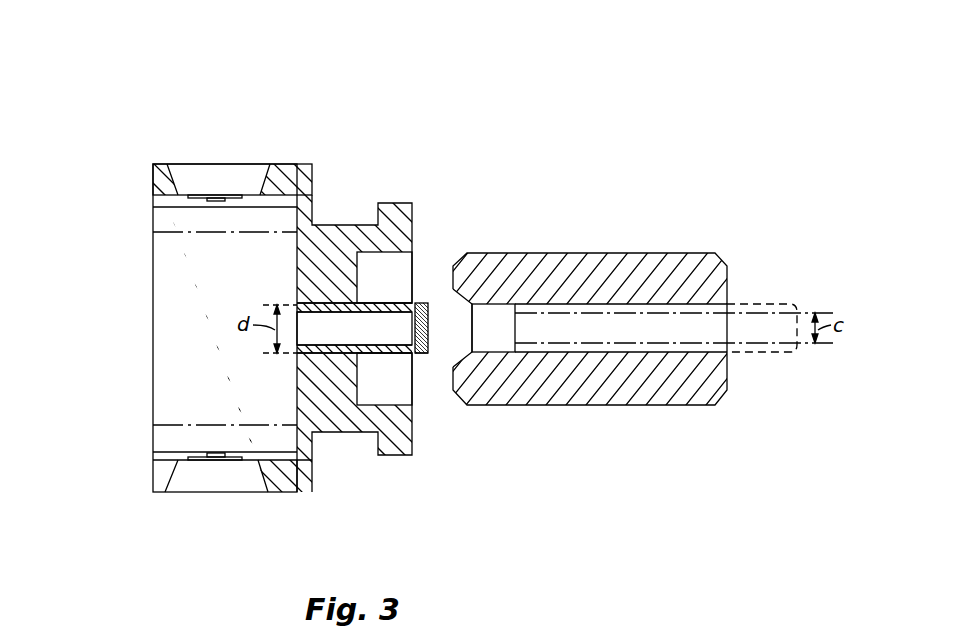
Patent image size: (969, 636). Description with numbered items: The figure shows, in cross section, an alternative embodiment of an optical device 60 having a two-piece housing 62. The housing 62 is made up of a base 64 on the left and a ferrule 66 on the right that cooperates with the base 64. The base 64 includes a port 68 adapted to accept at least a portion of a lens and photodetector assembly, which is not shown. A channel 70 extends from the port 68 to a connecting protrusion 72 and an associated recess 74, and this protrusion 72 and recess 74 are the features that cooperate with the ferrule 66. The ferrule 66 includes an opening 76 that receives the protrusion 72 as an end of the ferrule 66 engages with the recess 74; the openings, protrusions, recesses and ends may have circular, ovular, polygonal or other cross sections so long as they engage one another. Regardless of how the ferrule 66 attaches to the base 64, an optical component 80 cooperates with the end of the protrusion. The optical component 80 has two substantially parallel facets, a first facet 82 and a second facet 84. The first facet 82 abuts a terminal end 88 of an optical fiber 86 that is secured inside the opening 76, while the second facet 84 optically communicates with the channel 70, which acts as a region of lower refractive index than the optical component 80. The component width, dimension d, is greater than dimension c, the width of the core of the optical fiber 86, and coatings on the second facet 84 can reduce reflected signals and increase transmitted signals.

The optical device 60 is at (500, 502).
The two-piece housing 62 is at (540, 78).
The base 64 is at (273, 164).
The ferrule 66 is at (730, 256).
The port 68 is at (172, 271).
The channel 70 is at (330, 333).
The connecting protrusion 72 is at (380, 353).
The recess 74 is at (370, 263).
The opening 76 is at (503, 347).
The optical component 80 is at (432, 327).
The first facet 82 is at (472, 303).
The second facet 84 is at (427, 355).
The optical fiber 86 is at (774, 341).
The terminal end 88 is at (515, 327).